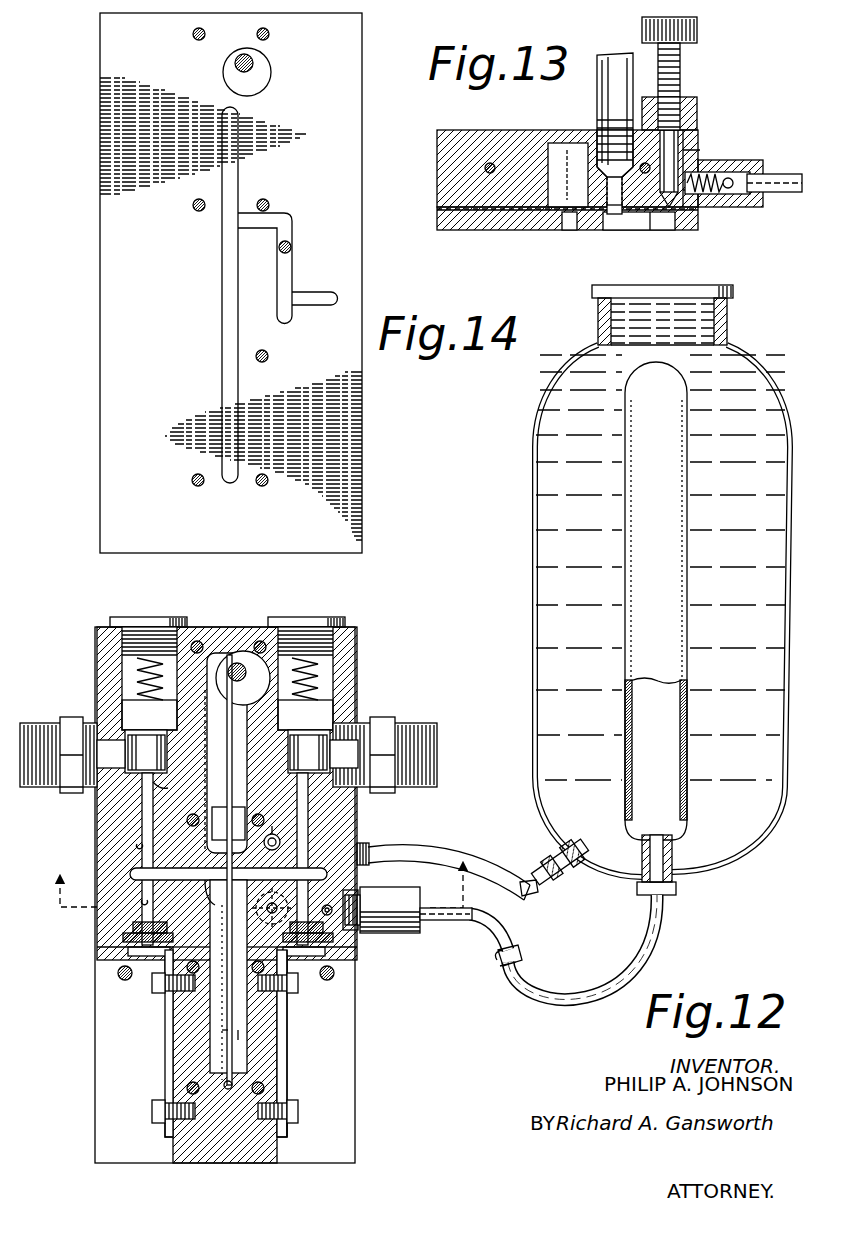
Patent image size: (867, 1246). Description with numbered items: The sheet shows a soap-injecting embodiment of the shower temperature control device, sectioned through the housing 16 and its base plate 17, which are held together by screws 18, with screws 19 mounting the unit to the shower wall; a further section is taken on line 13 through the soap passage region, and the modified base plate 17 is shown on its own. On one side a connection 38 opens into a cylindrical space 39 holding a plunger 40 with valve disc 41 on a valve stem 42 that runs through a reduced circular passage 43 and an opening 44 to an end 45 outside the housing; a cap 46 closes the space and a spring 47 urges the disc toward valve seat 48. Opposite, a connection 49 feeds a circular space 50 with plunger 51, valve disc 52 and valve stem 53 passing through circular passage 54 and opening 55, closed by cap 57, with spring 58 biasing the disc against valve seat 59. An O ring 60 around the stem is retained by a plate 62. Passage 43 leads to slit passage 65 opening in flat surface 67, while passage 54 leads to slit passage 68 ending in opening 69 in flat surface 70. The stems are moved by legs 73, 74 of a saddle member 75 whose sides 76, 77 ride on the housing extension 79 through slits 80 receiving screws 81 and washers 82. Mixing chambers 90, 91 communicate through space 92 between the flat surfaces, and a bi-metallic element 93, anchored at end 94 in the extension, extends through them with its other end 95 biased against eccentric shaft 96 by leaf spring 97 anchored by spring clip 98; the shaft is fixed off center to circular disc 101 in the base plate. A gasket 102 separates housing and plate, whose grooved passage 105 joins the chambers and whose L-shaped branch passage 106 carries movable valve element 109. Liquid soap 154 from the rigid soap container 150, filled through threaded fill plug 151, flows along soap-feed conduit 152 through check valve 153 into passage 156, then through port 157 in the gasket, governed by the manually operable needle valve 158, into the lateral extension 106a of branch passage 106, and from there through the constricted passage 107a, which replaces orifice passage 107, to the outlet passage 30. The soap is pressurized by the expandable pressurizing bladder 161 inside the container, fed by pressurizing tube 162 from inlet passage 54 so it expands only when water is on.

In FIG. 12, the section line 13 is at (260, 875).
In FIG. 13, the housing 16 is at (508, 142).
In FIG. 12, the housing 16 is at (360, 653).
In FIG. 14, the base plate 17 is at (366, 43).
In FIG. 13, the base plate 17 is at (537, 231).
In FIG. 12, the base plate 17 is at (358, 1098).
In FIG. 14, the screws 18 is at (270, 34).
In FIG. 12, the screws 18 is at (195, 640).
In FIG. 12, the screws 19 is at (118, 978).
In FIG. 13, the passage 30 is at (614, 70).
In FIG. 12, the connection 38 is at (45, 725).
In FIG. 12, the cylindrical space 39 is at (127, 667).
In FIG. 12, the plunger 40 is at (133, 710).
In FIG. 12, the valve disc 41 is at (133, 772).
In FIG. 12, the valve stem 42 is at (142, 821).
In FIG. 12, the reduced circular passage 43 is at (137, 845).
In FIG. 12, the opening 44 is at (145, 900).
In FIG. 12, the end 45 is at (128, 951).
In FIG. 12, the cap 46 is at (164, 600).
In FIG. 12, the spring 47 is at (133, 688).
In FIG. 12, the valve seat 48 is at (170, 782).
In FIG. 12, the connection 49 is at (418, 735).
In FIG. 12, the circular space 50 is at (330, 675).
In FIG. 12, the plunger 51 is at (333, 715).
In FIG. 12, the valve disc 52 is at (333, 787).
In FIG. 12, the valve stem 53 is at (368, 848).
In FIG. 12, the circular passage 54 is at (314, 822).
In FIG. 12, the opening 55 is at (305, 893).
In FIG. 12, the cap 57 is at (318, 617).
In FIG. 12, the spring 58 is at (325, 695).
In FIG. 12, the valve seat 59 is at (245, 771).
In FIG. 12, the O ring 60 is at (135, 925).
In FIG. 12, the plate 62 is at (125, 938).
In FIG. 12, the slit passage 65 is at (130, 873).
In FIG. 12, the flat surface 67 is at (210, 891).
In FIG. 12, the slit passage 68 is at (282, 850).
In FIG. 12, the opening 69 is at (264, 847).
In FIG. 12, the flat surface 70 is at (231, 895).
In FIG. 12, the leg 73 is at (130, 958).
In FIG. 12, the leg 74 is at (305, 972).
In FIG. 12, the saddle member 75 is at (290, 1050).
In FIG. 12, the side 76 is at (168, 1061).
In FIG. 12, the side 77 is at (286, 1031).
In FIG. 12, the extension 79 is at (258, 1160).
In FIG. 12, the slits 80 is at (160, 980).
In FIG. 12, the screw 81 is at (152, 1113).
In FIG. 12, the washers 82 is at (165, 1130).
In FIG. 12, the mixing chamber 90 is at (243, 733).
In FIG. 12, the mixing chamber 91 is at (240, 1036).
In FIG. 12, the space 92 is at (224, 905).
In FIG. 12, the bi-metallic element 93 is at (221, 1031).
In FIG. 12, the end 94 is at (230, 1089).
In FIG. 12, the end 95 is at (231, 656).
In FIG. 14, the eccentric shaft 96 is at (235, 61).
In FIG. 12, the eccentric shaft 96 is at (240, 663).
In FIG. 12, the leaf spring 97 is at (216, 745).
In FIG. 12, the spring clip 98 is at (214, 840).
In FIG. 14, the circular disc 101 is at (266, 73).
In FIG. 12, the circular disc 101 is at (252, 652).
In FIG. 13, the gasket 102 is at (442, 210).
In FIG. 14, the grooved passage 105 is at (221, 284).
In FIG. 14, the branch passage 106 is at (287, 222).
In FIG. 13, the branch passage 106 is at (607, 213).
In FIG. 14, the lateral extension 106a is at (306, 292).
In FIG. 13, the lateral extension 106a is at (645, 221).
In FIG. 12, the restricted orifice passage 107 is at (269, 922).
In FIG. 13, the constricted passage 107a is at (600, 165).
In FIG. 14, the movable valve element 109 is at (291, 245).
In FIG. 12, the soap container 150 is at (733, 850).
In FIG. 12, the fill plug 151 is at (712, 285).
In FIG. 13, the soap-feed conduit 152 is at (789, 194).
In FIG. 12, the soap-feed conduit 152 is at (473, 920).
In FIG. 13, the check valve 153 is at (743, 156).
In FIG. 12, the check valve 153 is at (394, 932).
In FIG. 12, the liquid soap 154 is at (560, 736).
In FIG. 13, the passage 156 is at (672, 170).
In FIG. 12, the passage 156 is at (328, 916).
In FIG. 13, the port 157 is at (653, 230).
In FIG. 13, the needle valve 158 is at (683, 58).
In FIG. 12, the pressurizing bladder 161 is at (690, 525).
In FIG. 12, the pressurizing tube 162 is at (569, 995).